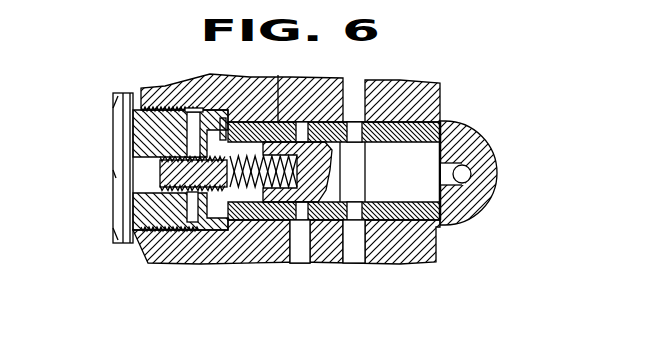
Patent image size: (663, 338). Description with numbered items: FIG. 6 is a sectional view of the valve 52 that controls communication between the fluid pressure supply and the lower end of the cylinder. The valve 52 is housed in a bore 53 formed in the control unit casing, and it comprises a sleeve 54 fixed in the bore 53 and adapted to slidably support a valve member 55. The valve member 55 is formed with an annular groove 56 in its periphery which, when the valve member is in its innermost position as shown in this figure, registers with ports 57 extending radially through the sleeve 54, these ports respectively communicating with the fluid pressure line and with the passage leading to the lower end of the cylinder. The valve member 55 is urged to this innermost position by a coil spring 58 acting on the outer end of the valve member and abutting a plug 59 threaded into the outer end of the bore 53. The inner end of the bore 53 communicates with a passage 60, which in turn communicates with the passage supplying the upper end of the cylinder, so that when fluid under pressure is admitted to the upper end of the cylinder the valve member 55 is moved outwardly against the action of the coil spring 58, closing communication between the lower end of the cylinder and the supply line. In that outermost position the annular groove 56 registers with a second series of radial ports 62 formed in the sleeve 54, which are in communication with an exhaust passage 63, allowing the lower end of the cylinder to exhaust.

The valve 52 is at (110, 90).
The bore 53 is at (257, 222).
The sleeve 54 is at (283, 86).
The valve member 55 is at (460, 137).
The annular groove 56 is at (440, 153).
The ports 57 is at (365, 198).
The coil spring 58 is at (245, 187).
The plug 59 is at (157, 210).
The passage 60 is at (468, 172).
The second series of radial ports 62 is at (282, 222).
The exhaust passage 63 is at (314, 263).